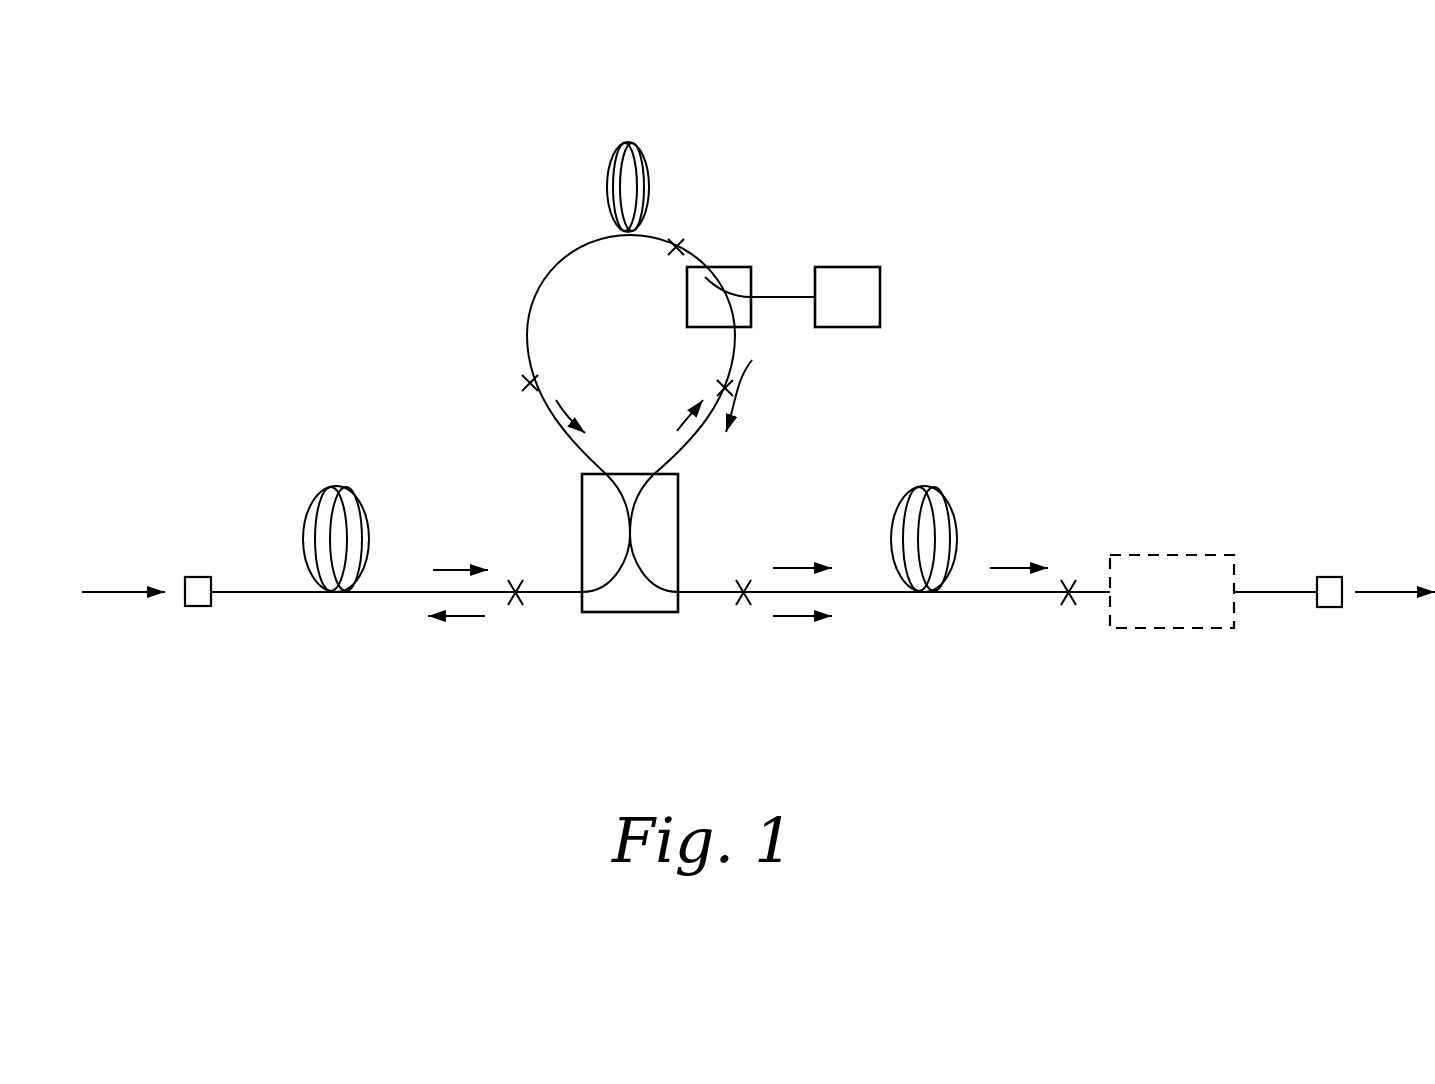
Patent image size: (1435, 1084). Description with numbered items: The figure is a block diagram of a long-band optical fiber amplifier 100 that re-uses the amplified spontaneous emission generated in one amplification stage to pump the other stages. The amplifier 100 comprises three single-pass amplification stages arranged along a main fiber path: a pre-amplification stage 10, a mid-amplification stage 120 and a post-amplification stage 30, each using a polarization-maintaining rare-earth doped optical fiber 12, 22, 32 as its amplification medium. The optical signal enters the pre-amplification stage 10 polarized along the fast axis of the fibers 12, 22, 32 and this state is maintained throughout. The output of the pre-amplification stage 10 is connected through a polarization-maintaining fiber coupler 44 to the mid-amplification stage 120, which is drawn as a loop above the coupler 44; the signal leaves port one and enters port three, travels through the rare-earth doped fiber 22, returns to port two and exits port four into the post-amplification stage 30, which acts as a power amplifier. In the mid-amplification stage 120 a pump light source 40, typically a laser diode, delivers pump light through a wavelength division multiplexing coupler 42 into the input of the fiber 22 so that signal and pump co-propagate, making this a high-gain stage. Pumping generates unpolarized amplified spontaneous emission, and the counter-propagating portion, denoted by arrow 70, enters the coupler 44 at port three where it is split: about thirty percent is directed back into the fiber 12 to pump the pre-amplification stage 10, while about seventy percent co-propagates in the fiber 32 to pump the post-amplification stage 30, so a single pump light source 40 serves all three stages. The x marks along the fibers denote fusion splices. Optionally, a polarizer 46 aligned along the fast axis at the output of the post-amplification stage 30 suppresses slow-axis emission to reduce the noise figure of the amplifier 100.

The pre-amplification stage 10 is at (318, 490).
The rare-earth doped optical fiber 12 is at (362, 498).
The rare-earth doped optical fiber 22 is at (653, 187).
The post-amplification stage 30 is at (955, 497).
The rare-earth doped optical fiber 32 is at (895, 508).
The pump light source 40 is at (860, 267).
The wavelength division multiplexing coupler 42 is at (740, 267).
The polarization-maintaining fiber coupler 44 is at (634, 614).
The polarizer 46 is at (1172, 555).
The arrow 70 is at (748, 402).
The long-band optical fiber amplifier 100 is at (1155, 365).
The mid-amplification stage 120 is at (782, 187).